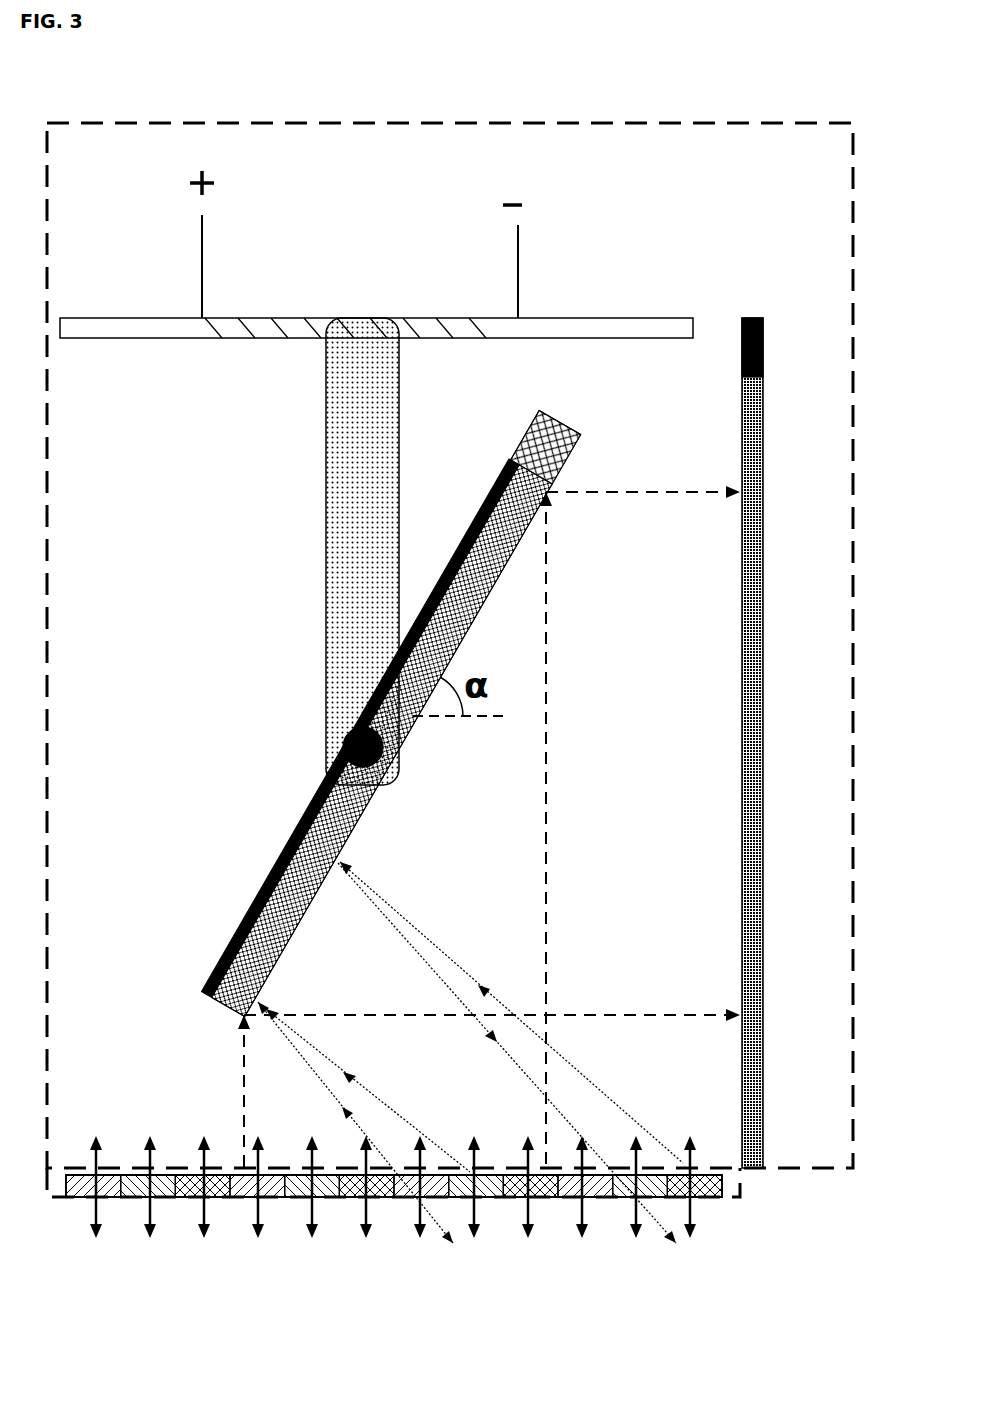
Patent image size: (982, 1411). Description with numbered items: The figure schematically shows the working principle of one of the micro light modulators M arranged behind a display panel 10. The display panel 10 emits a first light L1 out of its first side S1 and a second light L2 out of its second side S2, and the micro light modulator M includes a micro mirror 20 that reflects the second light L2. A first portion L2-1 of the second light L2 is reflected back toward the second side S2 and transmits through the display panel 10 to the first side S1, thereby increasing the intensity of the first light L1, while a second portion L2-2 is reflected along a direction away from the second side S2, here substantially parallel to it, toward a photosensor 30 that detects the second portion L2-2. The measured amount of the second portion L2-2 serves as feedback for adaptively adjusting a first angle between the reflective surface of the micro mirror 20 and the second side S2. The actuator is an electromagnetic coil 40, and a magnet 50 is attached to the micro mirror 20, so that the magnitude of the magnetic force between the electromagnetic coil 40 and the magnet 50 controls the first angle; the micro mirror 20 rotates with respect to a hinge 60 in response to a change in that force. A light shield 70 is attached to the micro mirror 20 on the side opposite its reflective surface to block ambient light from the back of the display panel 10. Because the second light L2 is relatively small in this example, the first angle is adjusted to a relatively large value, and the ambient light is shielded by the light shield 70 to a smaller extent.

The micro light modulator M is at (686, 122).
The display panel 10 is at (745, 1195).
The micro mirror 20 is at (400, 752).
The photosensor 30 is at (768, 752).
The electromagnetic coil 40 is at (273, 283).
The magnet 50 is at (541, 413).
The hinge 60 is at (345, 740).
The light shield 70 is at (270, 890).
The first light L1 is at (355, 1137).
The second light L2 is at (368, 1090).
The first portion of the second light L2-1 is at (472, 1012).
The second portion of the second light L2-2 is at (489, 827).
The first side S1 is at (539, 1075).
The second side S2 is at (720, 1128).